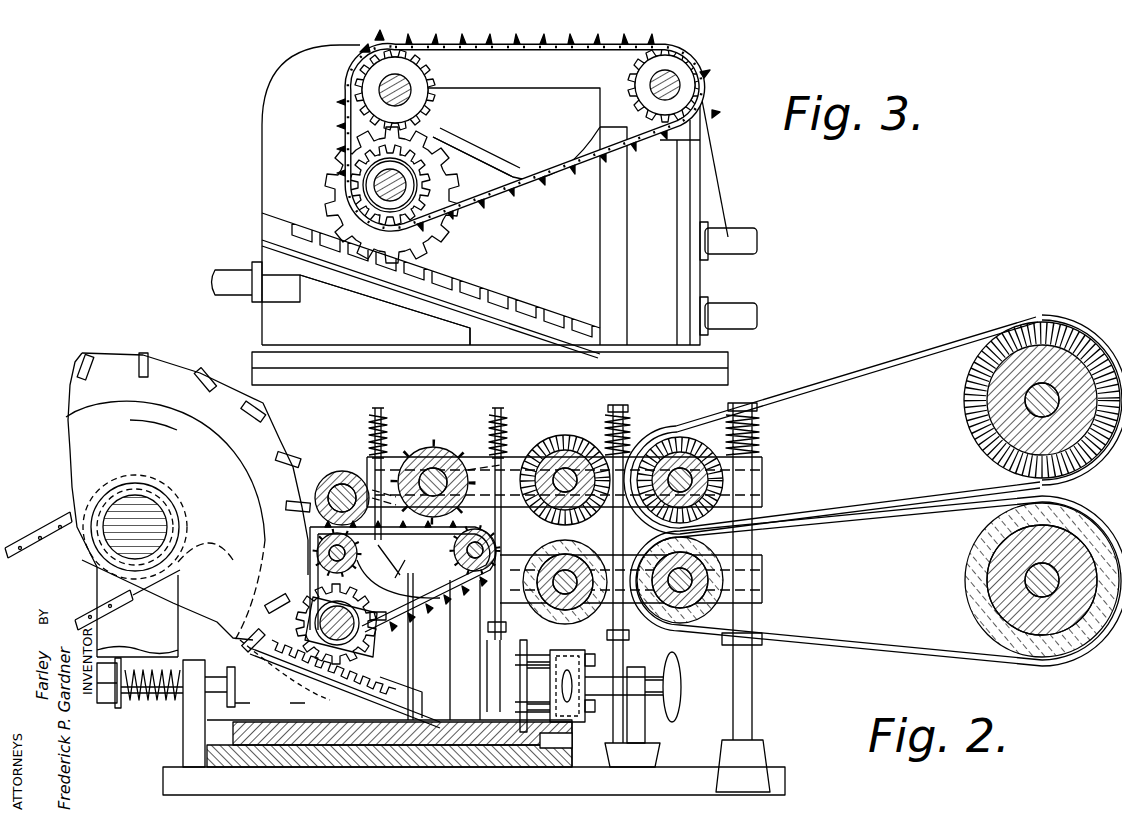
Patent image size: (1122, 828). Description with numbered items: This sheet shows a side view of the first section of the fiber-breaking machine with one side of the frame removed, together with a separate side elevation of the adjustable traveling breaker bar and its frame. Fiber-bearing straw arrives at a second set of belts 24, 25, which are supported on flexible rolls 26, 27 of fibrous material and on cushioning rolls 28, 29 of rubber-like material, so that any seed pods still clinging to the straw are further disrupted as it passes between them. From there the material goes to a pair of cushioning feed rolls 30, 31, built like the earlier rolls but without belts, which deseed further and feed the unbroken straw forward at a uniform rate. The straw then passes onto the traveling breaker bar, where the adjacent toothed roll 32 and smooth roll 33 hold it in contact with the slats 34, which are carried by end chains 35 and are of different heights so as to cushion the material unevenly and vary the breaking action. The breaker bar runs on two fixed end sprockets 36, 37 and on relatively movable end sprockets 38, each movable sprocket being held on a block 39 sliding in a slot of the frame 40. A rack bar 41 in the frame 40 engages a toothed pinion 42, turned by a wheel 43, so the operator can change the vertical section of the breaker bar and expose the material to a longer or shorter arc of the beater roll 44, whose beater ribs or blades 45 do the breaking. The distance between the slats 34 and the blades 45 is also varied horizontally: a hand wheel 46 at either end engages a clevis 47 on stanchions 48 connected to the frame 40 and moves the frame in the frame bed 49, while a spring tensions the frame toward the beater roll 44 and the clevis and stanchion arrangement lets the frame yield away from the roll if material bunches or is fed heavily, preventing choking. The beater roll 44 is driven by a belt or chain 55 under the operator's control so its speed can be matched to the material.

In FIG. 2, the belt 24 is at (928, 646).
In FIG. 2, the belt 25 is at (858, 378).
In FIG. 2, the flexible roll 26 is at (975, 432).
In FIG. 2, the flexible roll 27 is at (693, 480).
In FIG. 2, the cushioning roll 28 is at (967, 568).
In FIG. 2, the cushioning roll 29 is at (693, 580).
In FIG. 2, the cushioning feed roll 30 is at (565, 440).
In FIG. 2, the cushioning feed roll 31 is at (591, 612).
In FIG. 2, the toothed roll 32 is at (432, 452).
In FIG. 2, the smooth roll 33 is at (342, 475).
In FIG. 3, the slats 34 is at (345, 108).
In FIG. 3, the end chains 35 is at (528, 50).
In FIG. 3, the fixed end sprocket 36 is at (628, 76).
In FIG. 3, the fixed end sprocket 37 is at (425, 94).
In FIG. 3, the movable end sprocket 38 is at (458, 134).
In FIG. 3, the block 39 is at (440, 193).
In FIG. 3, the frame 40 is at (500, 248).
In FIG. 2, the frame 40 is at (357, 646).
In FIG. 3, the rack bar 41 is at (552, 312).
In FIG. 2, the rack bar 41 is at (386, 690).
In FIG. 3, the toothed pinion 42 is at (330, 205).
In FIG. 2, the toothed pinion 42 is at (336, 654).
In FIG. 2, the wheel 43 is at (404, 576).
In FIG. 2, the beater roll 44 is at (270, 435).
In FIG. 2, the beater ribs or blades 45 is at (207, 378).
In FIG. 2, the hand wheel 46 is at (680, 698).
In FIG. 2, the clevis 47 is at (548, 692).
In FIG. 3, the stanchions 48 is at (734, 318).
In FIG. 2, the stanchions 48 is at (536, 655).
In FIG. 3, the frame bed 49 is at (476, 386).
In FIG. 2, the frame bed 49 is at (283, 767).
In FIG. 2, the driving belt or chain 55 is at (45, 520).